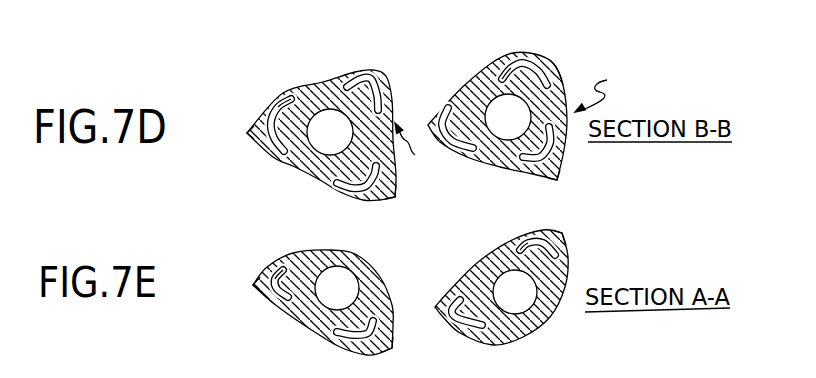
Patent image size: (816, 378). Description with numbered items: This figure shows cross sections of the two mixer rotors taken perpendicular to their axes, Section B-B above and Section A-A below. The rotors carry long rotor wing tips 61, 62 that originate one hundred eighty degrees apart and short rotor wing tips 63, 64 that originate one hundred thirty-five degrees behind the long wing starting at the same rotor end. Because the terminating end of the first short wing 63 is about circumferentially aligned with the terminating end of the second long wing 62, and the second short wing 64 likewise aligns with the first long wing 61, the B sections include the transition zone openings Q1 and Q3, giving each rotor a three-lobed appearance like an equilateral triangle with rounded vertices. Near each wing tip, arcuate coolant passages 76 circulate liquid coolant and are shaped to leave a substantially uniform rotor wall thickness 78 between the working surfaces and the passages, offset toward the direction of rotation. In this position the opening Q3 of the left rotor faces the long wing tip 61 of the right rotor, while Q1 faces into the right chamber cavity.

In FIG. 7D, the first long rotor wing tip 61 is at (407, 120).
In FIG. 7E, the first long rotor wing tip 61 is at (410, 293).
In FIG. 7D, the second long rotor wing tip 62 is at (406, 154).
In FIG. 7E, the second long rotor wing tip 62 is at (232, 277).
In FIG. 7D, the first short rotor wing tip 63 is at (579, 62).
In FIG. 7E, the first short rotor wing tip 63 is at (581, 249).
In FIG. 7D, the second short rotor wing tip 64 is at (410, 202).
In FIG. 7E, the second short rotor wing tip 64 is at (406, 338).
In FIG. 7D, the coolant passage 76 is at (402, 104).
In FIG. 7E, the coolant passage 76 is at (405, 282).
In FIG. 7D, the rotor wall thickness 78 is at (402, 63).
In FIG. 7E, the rotor wall thickness 78 is at (425, 236).
In FIG. 7D, the transition zone opening Q1 is at (603, 85).
In FIG. 7D, the transition zone opening Q3 is at (423, 157).